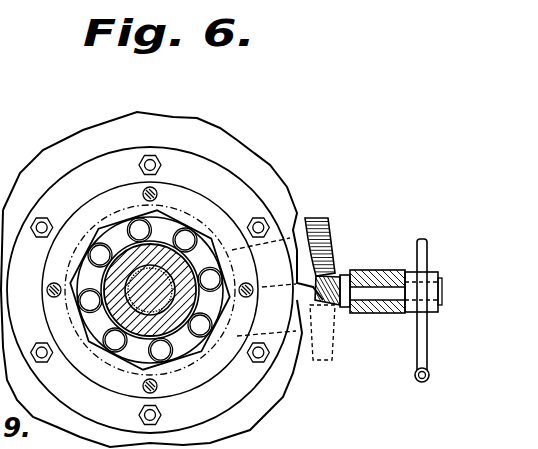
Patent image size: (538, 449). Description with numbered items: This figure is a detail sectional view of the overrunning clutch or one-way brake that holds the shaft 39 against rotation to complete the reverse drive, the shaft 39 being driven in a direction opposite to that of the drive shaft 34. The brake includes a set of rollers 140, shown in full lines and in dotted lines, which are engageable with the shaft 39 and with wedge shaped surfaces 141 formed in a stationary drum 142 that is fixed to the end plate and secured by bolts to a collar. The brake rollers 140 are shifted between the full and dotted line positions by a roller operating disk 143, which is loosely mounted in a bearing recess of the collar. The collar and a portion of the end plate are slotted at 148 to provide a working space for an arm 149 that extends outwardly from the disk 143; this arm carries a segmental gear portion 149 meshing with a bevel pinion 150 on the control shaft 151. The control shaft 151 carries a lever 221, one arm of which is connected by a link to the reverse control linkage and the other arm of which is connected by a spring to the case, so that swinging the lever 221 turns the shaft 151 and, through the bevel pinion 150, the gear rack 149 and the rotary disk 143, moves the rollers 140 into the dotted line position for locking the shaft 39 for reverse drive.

The drive shaft 34 is at (147, 312).
The shaft 39 is at (110, 315).
The brake rollers 140 is at (135, 226).
The wedge shaped surfaces 141 is at (150, 215).
The stationary drum 142 is at (223, 216).
The roller operating disk 143 is at (186, 226).
The slot 148 is at (309, 218).
The arm with segmental gear portion 149 is at (333, 257).
The bevel pinion 150 is at (330, 274).
The control shaft 151 is at (372, 293).
The lever 221 is at (425, 342).